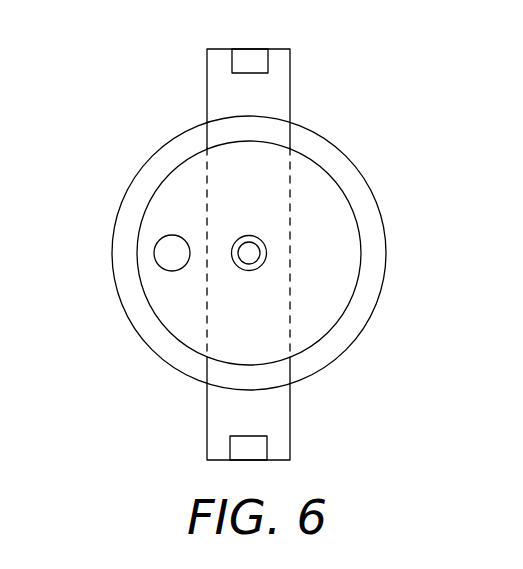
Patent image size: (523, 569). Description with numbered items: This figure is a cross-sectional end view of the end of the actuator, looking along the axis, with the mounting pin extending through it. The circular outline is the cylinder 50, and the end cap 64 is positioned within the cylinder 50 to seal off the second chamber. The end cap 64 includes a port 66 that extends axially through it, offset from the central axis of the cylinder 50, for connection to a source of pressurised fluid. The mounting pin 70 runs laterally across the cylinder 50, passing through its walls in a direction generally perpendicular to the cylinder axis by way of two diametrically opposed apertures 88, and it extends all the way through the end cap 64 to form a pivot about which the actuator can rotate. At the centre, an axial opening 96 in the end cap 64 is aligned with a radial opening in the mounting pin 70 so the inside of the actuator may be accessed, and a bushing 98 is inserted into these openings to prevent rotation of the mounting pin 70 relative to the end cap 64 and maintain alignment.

The cylinder 50 is at (367, 208).
The end cap 64 is at (335, 285).
The port 66 is at (172, 253).
The mounting pin 70 is at (278, 98).
The apertures 88 is at (207, 124).
The axial opening 96 is at (238, 268).
The bushing 98 is at (250, 236).